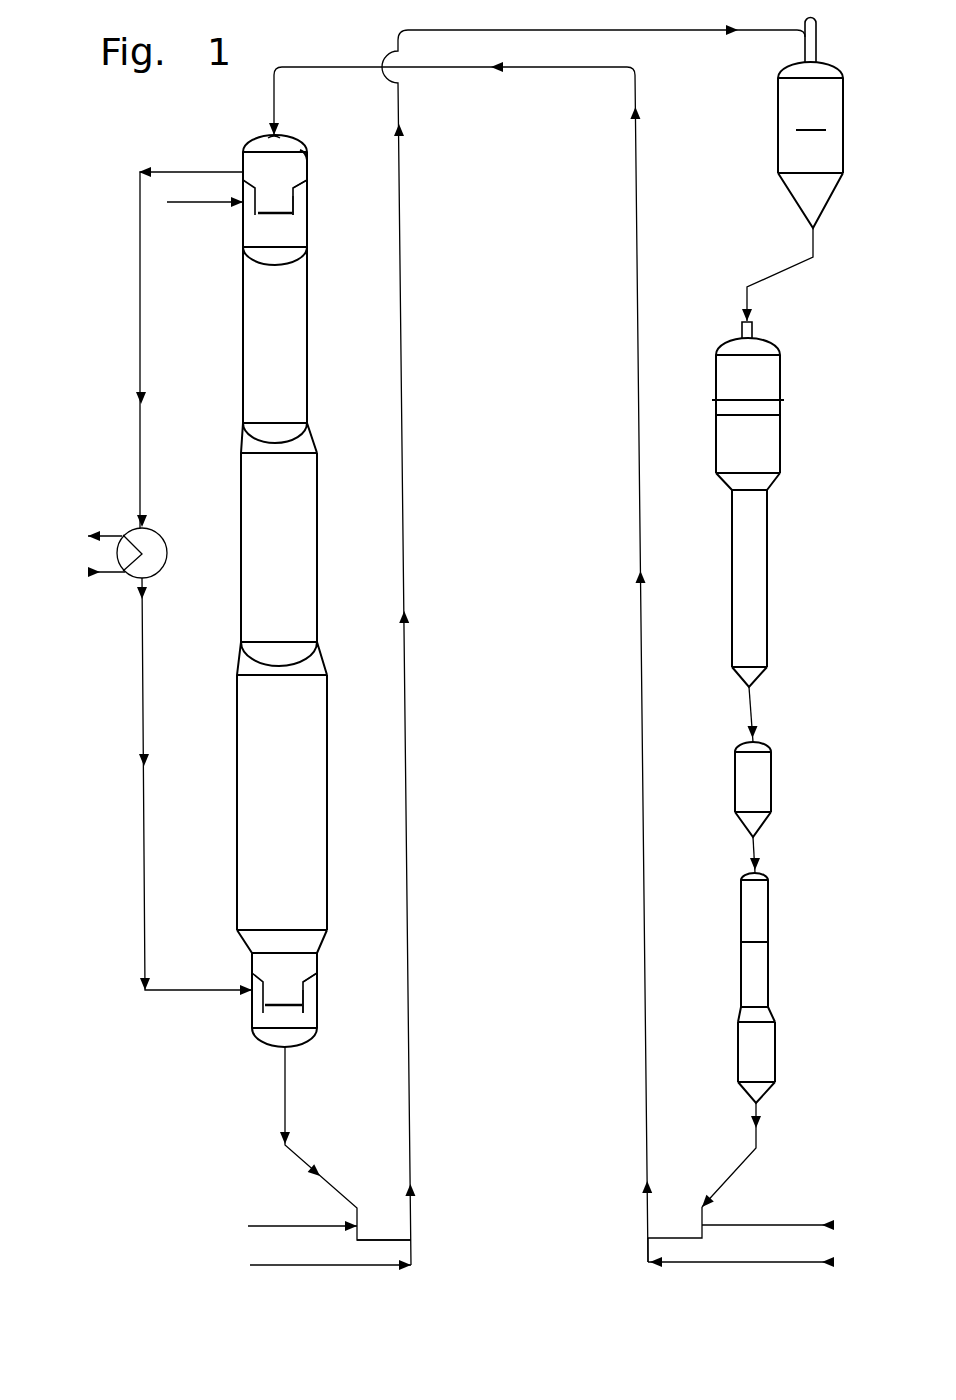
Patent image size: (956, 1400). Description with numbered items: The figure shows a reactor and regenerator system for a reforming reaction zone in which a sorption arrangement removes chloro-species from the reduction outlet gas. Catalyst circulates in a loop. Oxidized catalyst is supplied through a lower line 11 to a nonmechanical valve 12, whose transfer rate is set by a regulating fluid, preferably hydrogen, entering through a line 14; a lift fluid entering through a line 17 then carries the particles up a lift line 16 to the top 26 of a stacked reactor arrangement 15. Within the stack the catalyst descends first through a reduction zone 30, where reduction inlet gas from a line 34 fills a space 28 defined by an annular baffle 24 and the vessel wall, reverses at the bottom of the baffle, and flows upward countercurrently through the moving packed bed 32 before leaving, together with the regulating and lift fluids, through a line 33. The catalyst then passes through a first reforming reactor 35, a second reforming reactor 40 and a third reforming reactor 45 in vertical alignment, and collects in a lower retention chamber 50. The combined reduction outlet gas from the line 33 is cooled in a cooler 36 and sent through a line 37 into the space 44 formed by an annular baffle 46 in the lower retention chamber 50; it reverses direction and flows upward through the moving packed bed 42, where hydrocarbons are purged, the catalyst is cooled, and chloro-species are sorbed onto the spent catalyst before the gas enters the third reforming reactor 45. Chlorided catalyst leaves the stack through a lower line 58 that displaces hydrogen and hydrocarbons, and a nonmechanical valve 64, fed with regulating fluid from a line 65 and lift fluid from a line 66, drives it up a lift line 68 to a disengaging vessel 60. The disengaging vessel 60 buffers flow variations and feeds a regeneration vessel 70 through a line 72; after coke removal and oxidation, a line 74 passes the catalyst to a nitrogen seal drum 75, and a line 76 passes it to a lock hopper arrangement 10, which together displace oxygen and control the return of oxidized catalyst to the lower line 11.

The lock hopper arrangement 10 is at (770, 977).
The lower line 11 is at (748, 1158).
The nonmechanical valve 12 is at (640, 1270).
The line 14 is at (773, 1225).
The stacked reactor arrangement 15 is at (252, 591).
The lift line 16 is at (517, 69).
The line 17 is at (778, 1263).
The annular baffle 24 is at (306, 215).
The top 26 is at (262, 139).
The space 28 is at (305, 191).
The reduction zone 30 is at (308, 162).
The moving packed bed 32 is at (275, 197).
The line 33 is at (166, 172).
The line 34 is at (200, 202).
The first reforming reactor 35 is at (243, 306).
The cooler 36 is at (156, 575).
The line 37 is at (145, 857).
The second reforming reactor 40 is at (240, 537).
The moving packed bed 42 is at (284, 993).
The space 44 is at (306, 990).
The third reforming reactor 45 is at (237, 771).
The annular baffle 46 is at (306, 1000).
The lower retention chamber 50 is at (252, 964).
The lower line 58 is at (285, 1096).
The disengaging vessel 60 is at (810, 123).
The nonmechanical valve 64 is at (425, 1238).
The line 65 is at (285, 1226).
The line 66 is at (289, 1265).
The lift line 68 is at (616, 30).
The regeneration vessel 70 is at (781, 375).
The line 72 is at (769, 278).
The line 74 is at (751, 700).
The nitrogen seal drum 75 is at (773, 778).
The line 76 is at (756, 848).